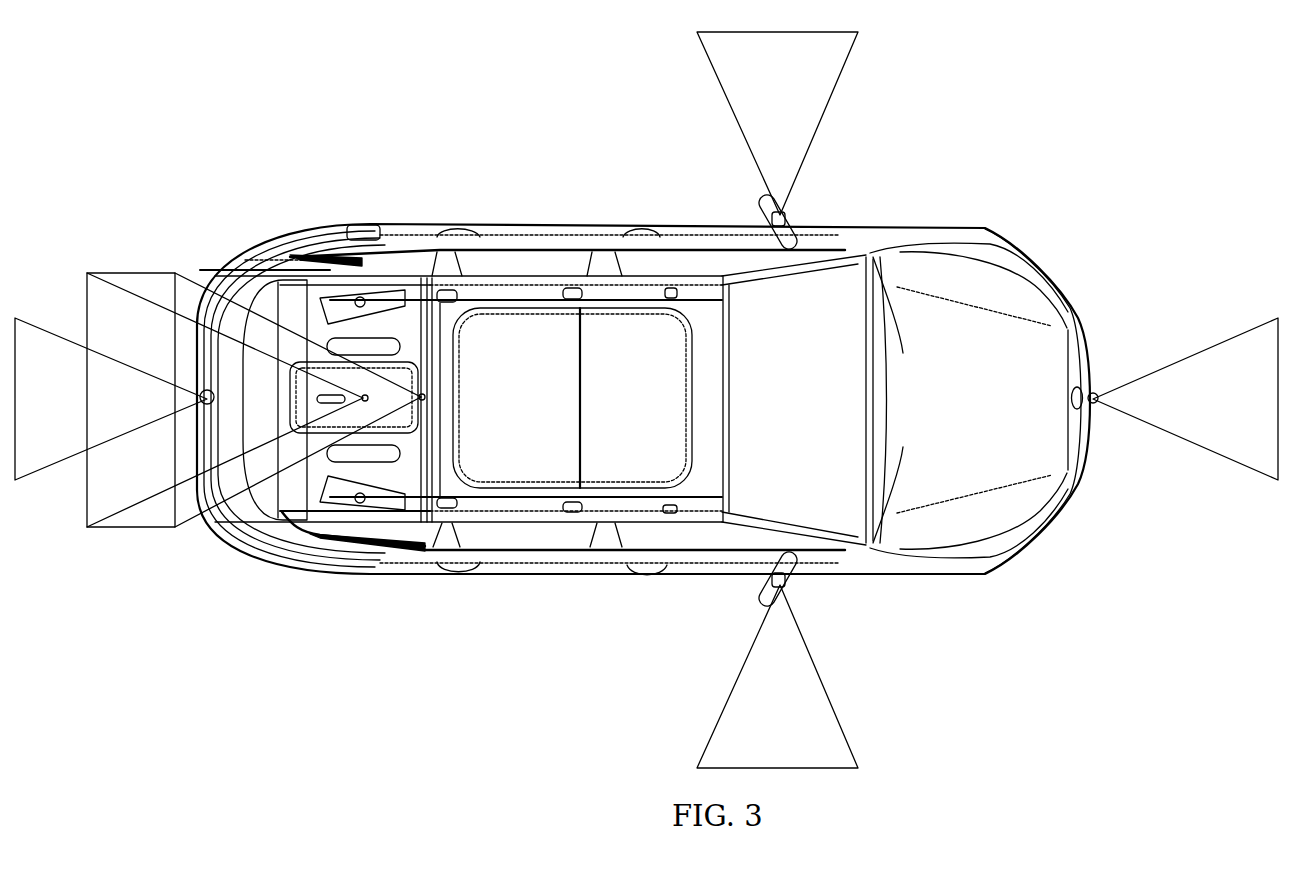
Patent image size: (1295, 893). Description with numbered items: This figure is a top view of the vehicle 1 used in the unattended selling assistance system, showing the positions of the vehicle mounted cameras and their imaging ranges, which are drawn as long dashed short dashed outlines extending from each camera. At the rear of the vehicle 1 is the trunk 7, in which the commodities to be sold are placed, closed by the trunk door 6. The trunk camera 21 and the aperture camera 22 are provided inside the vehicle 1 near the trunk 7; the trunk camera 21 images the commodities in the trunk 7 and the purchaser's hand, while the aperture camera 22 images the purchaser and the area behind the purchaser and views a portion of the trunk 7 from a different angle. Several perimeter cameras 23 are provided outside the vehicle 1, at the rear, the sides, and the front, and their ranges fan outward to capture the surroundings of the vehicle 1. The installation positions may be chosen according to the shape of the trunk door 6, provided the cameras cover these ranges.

The vehicle 1 is at (970, 197).
The trunk door 6 is at (247, 505).
The trunk 7 is at (333, 552).
The trunk camera 21 is at (425, 397).
The aperture camera 22 is at (368, 396).
The perimeter camera 23 is at (790, 216).